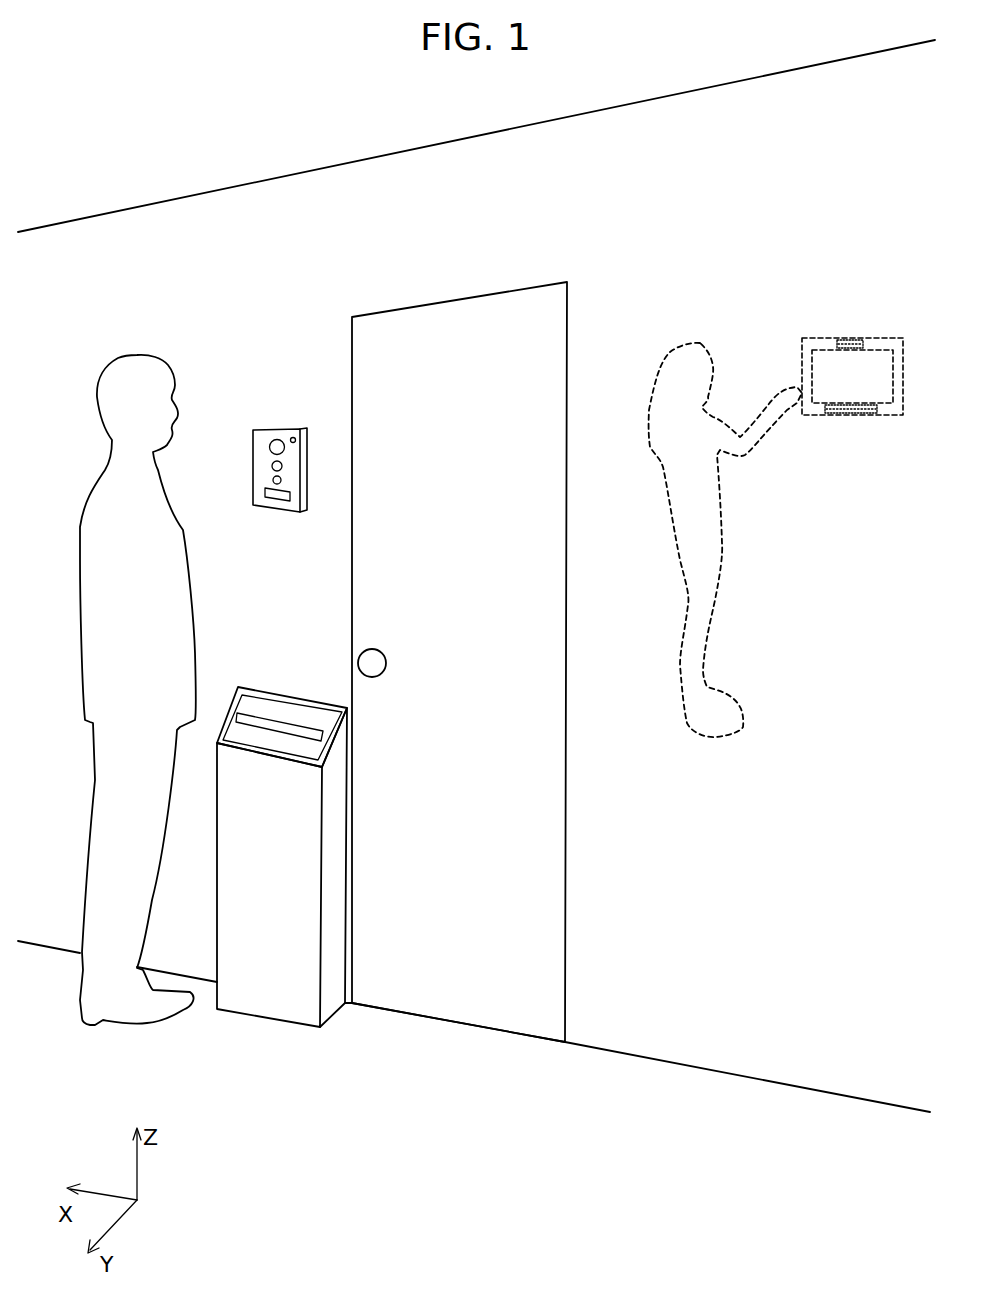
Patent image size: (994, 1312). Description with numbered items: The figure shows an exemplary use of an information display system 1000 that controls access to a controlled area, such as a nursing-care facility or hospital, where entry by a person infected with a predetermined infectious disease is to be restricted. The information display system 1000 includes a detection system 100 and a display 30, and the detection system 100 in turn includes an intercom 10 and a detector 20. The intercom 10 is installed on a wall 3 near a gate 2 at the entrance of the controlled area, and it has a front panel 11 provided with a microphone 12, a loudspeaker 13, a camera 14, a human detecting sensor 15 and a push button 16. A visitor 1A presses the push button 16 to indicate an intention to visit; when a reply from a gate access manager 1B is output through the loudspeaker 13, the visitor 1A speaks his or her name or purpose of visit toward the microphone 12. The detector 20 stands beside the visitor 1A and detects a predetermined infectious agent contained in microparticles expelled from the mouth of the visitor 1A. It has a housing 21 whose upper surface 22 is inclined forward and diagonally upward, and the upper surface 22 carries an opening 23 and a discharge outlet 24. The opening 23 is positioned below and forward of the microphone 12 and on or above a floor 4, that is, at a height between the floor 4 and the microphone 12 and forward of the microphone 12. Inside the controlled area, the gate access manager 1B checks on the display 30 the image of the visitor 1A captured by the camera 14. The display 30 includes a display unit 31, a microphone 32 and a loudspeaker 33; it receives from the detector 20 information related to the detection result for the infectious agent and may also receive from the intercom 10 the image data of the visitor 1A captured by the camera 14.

The information display system 1000 is at (476, 576).
The detection system 100 is at (292, 562).
The intercom 10 is at (270, 473).
The front panel 11 is at (292, 483).
The microphone 12 is at (271, 464).
The loudspeaker 13 is at (272, 480).
The camera 14 is at (269, 444).
The human detecting sensor 15 is at (293, 437).
The push button 16 is at (264, 495).
The detector 20 is at (252, 802).
The housing 21 is at (216, 892).
The upper surface 22 is at (243, 686).
The opening 23 is at (272, 717).
The discharge outlet 24 is at (248, 702).
The display 30 is at (857, 363).
The display unit 31 is at (865, 390).
The microphone 32 is at (843, 339).
The loudspeaker 33 is at (850, 414).
The visitor 1A is at (118, 358).
The gate access manager 1B is at (700, 343).
The gate 2 is at (424, 301).
The wall 3 is at (302, 254).
The floor 4 is at (302, 1107).